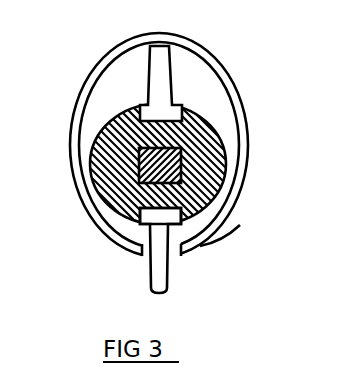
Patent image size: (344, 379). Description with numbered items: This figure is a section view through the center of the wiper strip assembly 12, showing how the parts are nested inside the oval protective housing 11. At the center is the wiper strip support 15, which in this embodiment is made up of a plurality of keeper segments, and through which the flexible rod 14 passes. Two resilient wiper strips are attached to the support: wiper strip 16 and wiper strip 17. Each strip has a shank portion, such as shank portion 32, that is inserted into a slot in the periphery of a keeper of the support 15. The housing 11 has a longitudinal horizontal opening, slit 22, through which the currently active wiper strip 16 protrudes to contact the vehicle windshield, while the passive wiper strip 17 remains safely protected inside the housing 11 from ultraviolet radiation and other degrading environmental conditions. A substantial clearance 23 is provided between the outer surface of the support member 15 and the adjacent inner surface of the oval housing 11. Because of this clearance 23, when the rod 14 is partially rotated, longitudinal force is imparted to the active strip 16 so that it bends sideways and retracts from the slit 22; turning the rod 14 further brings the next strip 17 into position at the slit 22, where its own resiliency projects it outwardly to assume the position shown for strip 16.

The oval protective housing 11 is at (203, 58).
The wiper strip assembly 12 is at (214, 99).
The flexible rod 14 is at (138, 174).
The wiper strip support 15 is at (205, 140).
The wiper strip 16 is at (168, 268).
The wiper strip 17 is at (146, 79).
The slit 22 is at (180, 254).
The clearance 23 is at (228, 236).
The shank portion 32 is at (143, 229).